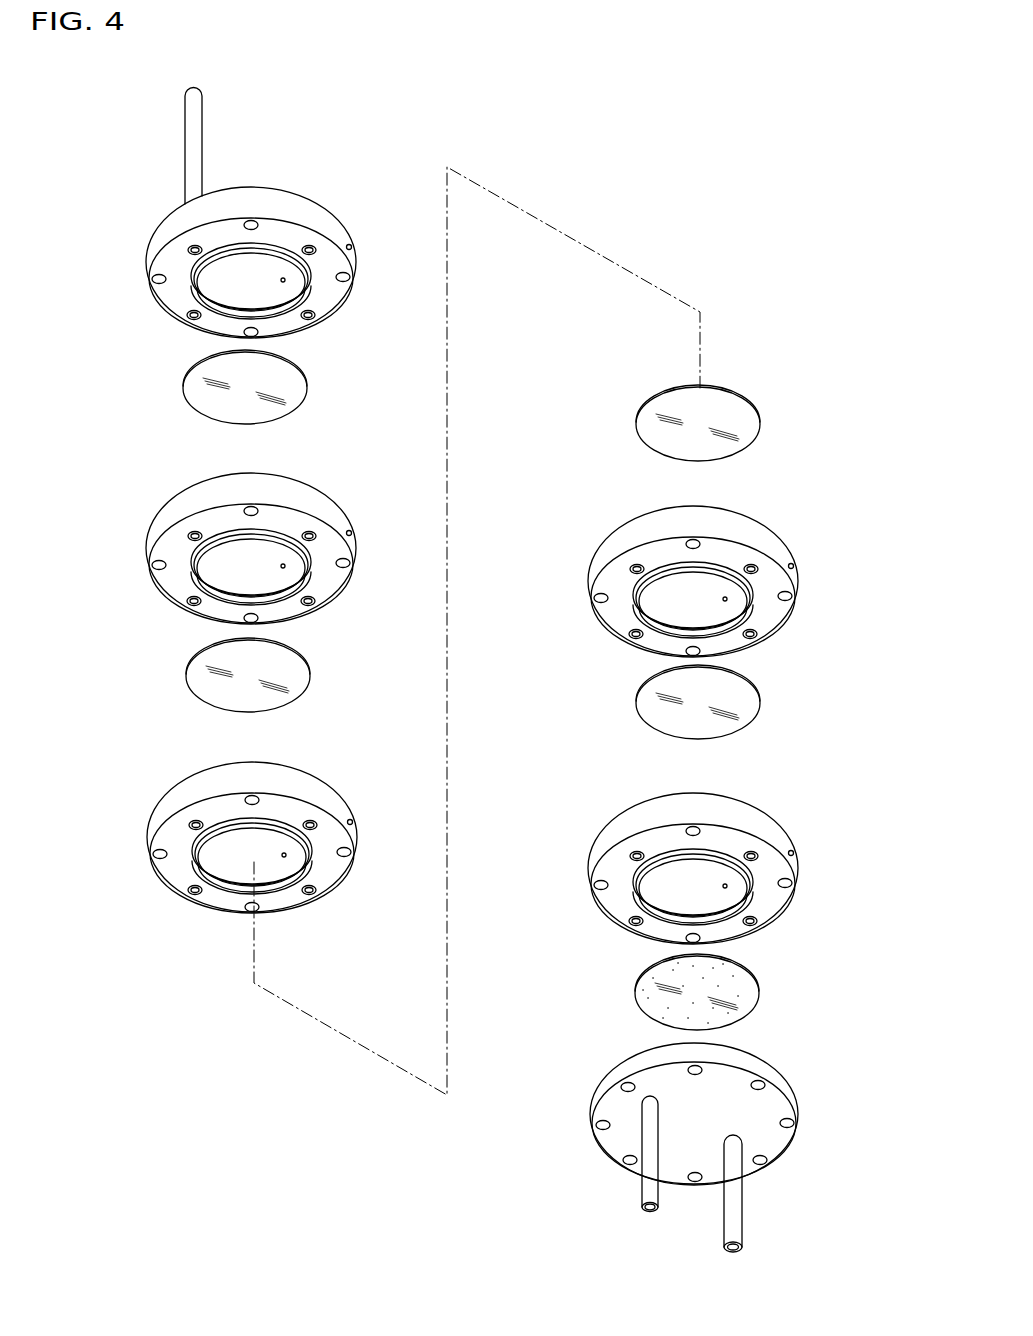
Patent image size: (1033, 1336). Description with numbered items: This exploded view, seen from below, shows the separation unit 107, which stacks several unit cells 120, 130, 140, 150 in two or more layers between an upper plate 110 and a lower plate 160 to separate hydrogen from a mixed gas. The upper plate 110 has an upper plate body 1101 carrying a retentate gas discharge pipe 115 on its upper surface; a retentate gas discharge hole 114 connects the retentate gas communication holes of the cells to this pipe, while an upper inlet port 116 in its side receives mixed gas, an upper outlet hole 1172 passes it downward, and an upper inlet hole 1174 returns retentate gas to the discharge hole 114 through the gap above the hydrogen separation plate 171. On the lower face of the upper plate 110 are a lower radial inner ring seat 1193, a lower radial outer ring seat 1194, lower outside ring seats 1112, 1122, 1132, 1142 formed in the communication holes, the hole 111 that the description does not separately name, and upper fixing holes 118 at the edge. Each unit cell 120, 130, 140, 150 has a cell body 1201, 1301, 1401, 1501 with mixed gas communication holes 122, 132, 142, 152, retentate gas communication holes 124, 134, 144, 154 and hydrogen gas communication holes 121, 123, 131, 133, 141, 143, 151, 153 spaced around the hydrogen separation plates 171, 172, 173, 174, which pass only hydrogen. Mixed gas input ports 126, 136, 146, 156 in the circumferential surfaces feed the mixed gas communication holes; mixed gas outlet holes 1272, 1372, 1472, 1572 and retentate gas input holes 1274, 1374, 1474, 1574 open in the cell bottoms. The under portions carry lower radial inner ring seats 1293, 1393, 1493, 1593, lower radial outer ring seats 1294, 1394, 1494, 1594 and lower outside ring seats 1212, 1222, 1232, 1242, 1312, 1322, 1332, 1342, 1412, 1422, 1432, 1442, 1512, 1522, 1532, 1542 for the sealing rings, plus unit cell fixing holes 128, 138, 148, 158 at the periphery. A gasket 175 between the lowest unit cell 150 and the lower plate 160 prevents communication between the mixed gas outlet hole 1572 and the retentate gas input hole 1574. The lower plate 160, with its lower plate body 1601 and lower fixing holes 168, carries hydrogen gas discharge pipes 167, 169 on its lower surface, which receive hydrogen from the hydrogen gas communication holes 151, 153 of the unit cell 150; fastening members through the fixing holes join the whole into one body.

The separation unit 107 is at (504, 137).
The upper plate 110 is at (231, 240).
The retentate gas discharge pipe 115 is at (230, 146).
The upper plate body 1101 is at (251, 225).
The lower radial inner ring seat 1193 is at (214, 229).
The lower radial outer ring seat 1194 is at (251, 227).
The lower outside ring seat 1122 is at (330, 205).
The lower outside ring seat 1132 is at (140, 223).
The upper inlet port 116 is at (385, 254).
The upper fixing hole 118 is at (115, 290).
The upper outlet hole 1172 is at (351, 298).
The retentate gas discharge hole 114 is at (143, 324).
The first fastening hole 111 is at (337, 330).
The lower outside ring seat 1142 is at (134, 340).
The lower outside ring seat 1112 is at (348, 344).
The upper inlet hole 1174 is at (213, 322).
The hydrogen separation plate 171 is at (278, 387).
The unit cell 120 is at (220, 543).
The cell body 1201 is at (186, 557).
The lower radial inner ring seat 1293 is at (231, 508).
The lower radial outer ring seat 1294 is at (251, 511).
The lower outside ring seat 1222 is at (332, 489).
The hydrogen gas communication hole 123 is at (158, 496).
The mixed gas communication hole 122 is at (348, 506).
The lower outside ring seat 1232 is at (140, 507).
The mixed gas input port 126 is at (383, 538).
The unit cell fixing hole 128 is at (116, 576).
The mixed gas outlet hole 1272 is at (351, 583).
The retentate gas communication hole 124 is at (144, 609).
The hydrogen gas communication hole 121 is at (338, 615).
The lower outside ring seat 1242 is at (134, 625).
The lower outside ring seat 1212 is at (348, 628).
The retentate gas input hole 1274 is at (213, 606).
The hydrogen separation plate 172 is at (278, 675).
The unit cell 130 is at (221, 832).
The cell body 1301 is at (187, 846).
The lower radial inner ring seat 1393 is at (232, 797).
The lower radial outer ring seat 1394 is at (252, 800).
The lower outside ring seat 1322 is at (333, 778).
The hydrogen gas communication hole 133 is at (159, 785).
The mixed gas communication hole 132 is at (349, 795).
The lower outside ring seat 1332 is at (141, 796).
The mixed gas input port 136 is at (384, 827).
The unit cell fixing hole 138 is at (117, 865).
The mixed gas outlet hole 1372 is at (352, 872).
The retentate gas communication hole 134 is at (145, 898).
The hydrogen gas communication hole 131 is at (339, 904).
The lower outside ring seat 1342 is at (135, 914).
The lower outside ring seat 1312 is at (349, 917).
The retentate gas input hole 1374 is at (214, 895).
The hydrogen separation plate 173 is at (730, 423).
The unit cell 140 is at (662, 576).
The cell body 1401 is at (628, 590).
The lower radial inner ring seat 1493 is at (673, 541).
The lower radial outer ring seat 1494 is at (693, 544).
The lower outside ring seat 1422 is at (774, 522).
The hydrogen gas communication hole 143 is at (600, 529).
The mixed gas communication hole 142 is at (790, 539).
The lower outside ring seat 1432 is at (582, 540).
The mixed gas input port 146 is at (825, 571).
The unit cell fixing hole 148 is at (558, 609).
The mixed gas outlet hole 1472 is at (793, 616).
The retentate gas communication hole 144 is at (586, 642).
The hydrogen gas communication hole 141 is at (780, 648).
The lower outside ring seat 1442 is at (576, 658).
The lower outside ring seat 1412 is at (790, 661).
The retentate gas input hole 1474 is at (655, 639).
The hydrogen separation plate 174 is at (731, 702).
The unit cell 150 is at (662, 863).
The cell body 1501 is at (628, 877).
The lower radial inner ring seat 1593 is at (673, 828).
The lower radial outer ring seat 1594 is at (693, 831).
The lower outside ring seat 1522 is at (774, 809).
The hydrogen gas communication hole 153 is at (600, 816).
The mixed gas communication hole 152 is at (790, 826).
The lower outside ring seat 1532 is at (582, 827).
The mixed gas input port 156 is at (825, 858).
The unit cell fixing hole 158 is at (558, 896).
The mixed gas outlet hole 1572 is at (793, 903).
The retentate gas communication hole 154 is at (586, 929).
The hydrogen gas communication hole 151 is at (780, 935).
The lower outside ring seat 1542 is at (576, 945).
The lower outside ring seat 1512 is at (790, 948).
The retentate gas input hole 1574 is at (655, 926).
The gasket 175 is at (731, 992).
The lower plate 160 is at (691, 1147).
The lower plate body 1601 is at (800, 1103).
The lower fixing hole 168 is at (790, 1126).
The hydrogen gas discharge pipe 169 is at (647, 1193).
The hydrogen gas discharge pipe 167 is at (737, 1212).